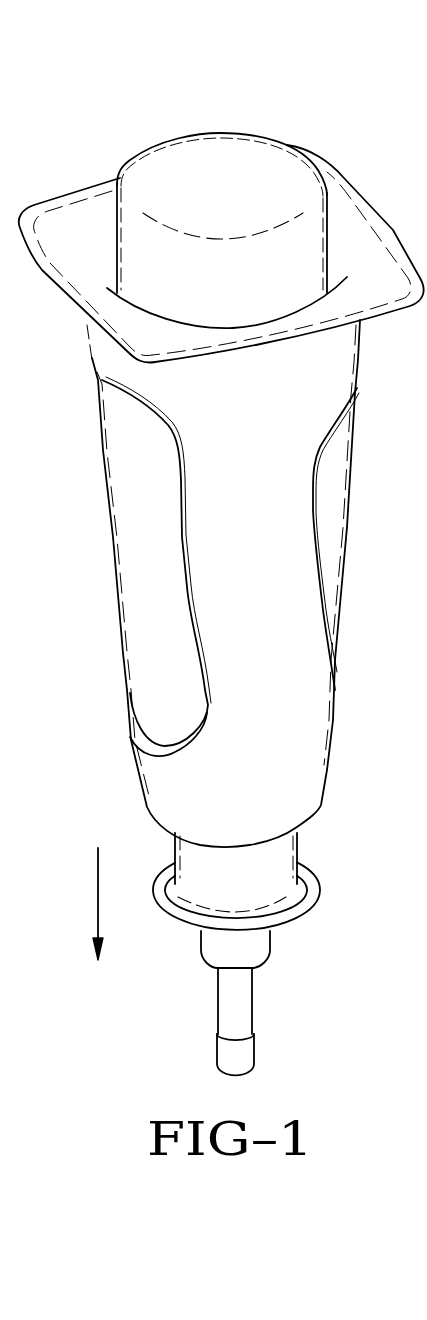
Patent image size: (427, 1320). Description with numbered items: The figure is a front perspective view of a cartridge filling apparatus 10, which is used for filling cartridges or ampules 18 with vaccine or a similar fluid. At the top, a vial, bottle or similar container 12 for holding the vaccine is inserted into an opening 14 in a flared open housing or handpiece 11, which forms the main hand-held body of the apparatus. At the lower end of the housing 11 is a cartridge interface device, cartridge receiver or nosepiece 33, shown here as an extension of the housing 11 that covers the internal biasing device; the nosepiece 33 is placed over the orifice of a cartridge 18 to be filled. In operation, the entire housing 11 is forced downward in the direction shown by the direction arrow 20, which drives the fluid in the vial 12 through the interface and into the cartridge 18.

The cartridge filling apparatus 10 is at (105, 113).
The housing 11 is at (267, 430).
The vial 12 is at (235, 167).
The opening 14 is at (335, 277).
The cartridge 18 is at (247, 1013).
The direction arrow 20 is at (98, 900).
The nosepiece 33 is at (264, 950).